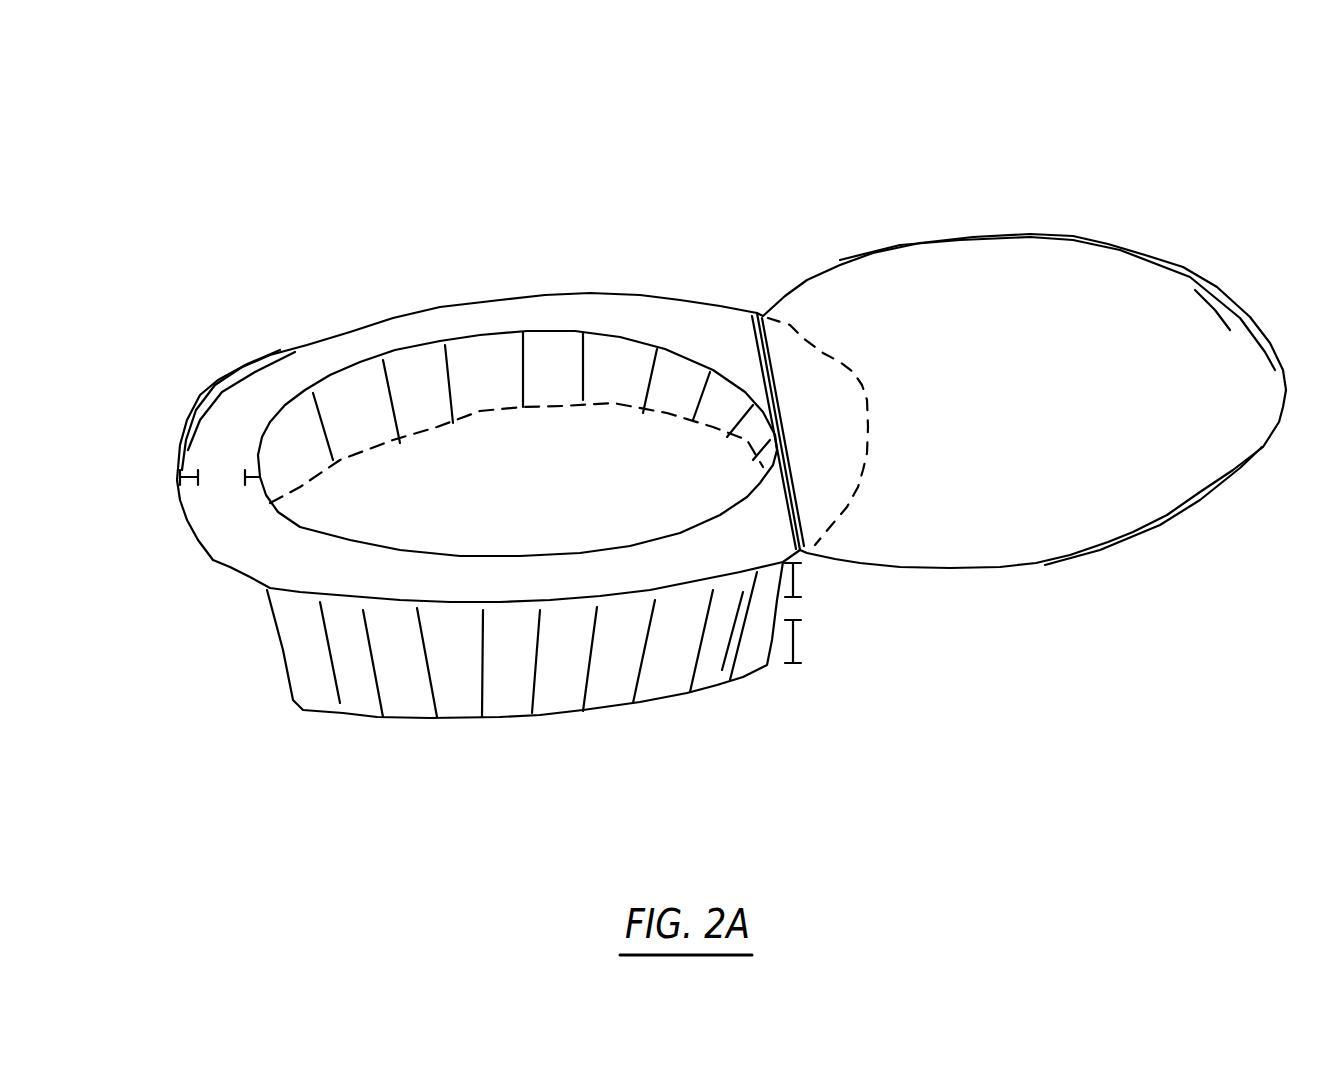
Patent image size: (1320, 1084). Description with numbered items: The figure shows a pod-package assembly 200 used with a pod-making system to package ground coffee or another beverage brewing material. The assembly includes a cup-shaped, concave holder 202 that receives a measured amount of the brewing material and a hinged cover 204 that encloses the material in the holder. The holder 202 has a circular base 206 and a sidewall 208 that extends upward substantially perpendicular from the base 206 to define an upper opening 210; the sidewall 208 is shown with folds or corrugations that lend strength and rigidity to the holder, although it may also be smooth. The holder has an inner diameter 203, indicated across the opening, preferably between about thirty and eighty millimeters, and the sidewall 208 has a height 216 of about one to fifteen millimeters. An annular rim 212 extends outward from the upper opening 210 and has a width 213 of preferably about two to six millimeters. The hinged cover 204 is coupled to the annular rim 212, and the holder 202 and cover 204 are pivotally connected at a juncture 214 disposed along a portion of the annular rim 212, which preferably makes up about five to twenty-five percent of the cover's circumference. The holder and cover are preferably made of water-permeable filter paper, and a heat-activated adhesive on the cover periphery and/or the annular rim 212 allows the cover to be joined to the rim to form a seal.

The pod-package assembly 200 is at (630, 127).
The holder 202 is at (268, 641).
The inner diameter 203 is at (566, 426).
The hinged cover 204 is at (1073, 235).
The circular base 206 is at (512, 381).
The sidewall 208 is at (298, 667).
The upper opening 210 is at (578, 357).
The annular rim 212 is at (257, 390).
The width 213 is at (224, 485).
The juncture 214 is at (833, 407).
The height 216 is at (798, 607).